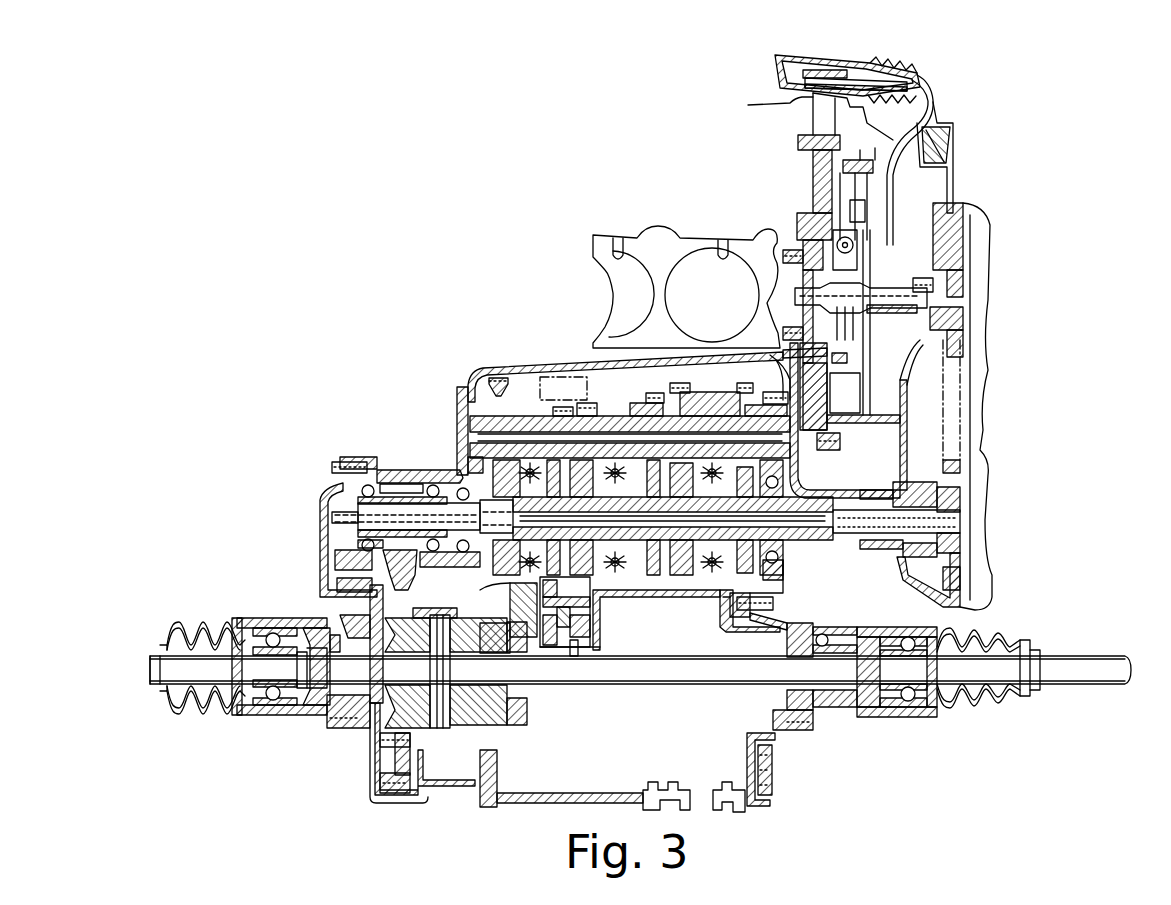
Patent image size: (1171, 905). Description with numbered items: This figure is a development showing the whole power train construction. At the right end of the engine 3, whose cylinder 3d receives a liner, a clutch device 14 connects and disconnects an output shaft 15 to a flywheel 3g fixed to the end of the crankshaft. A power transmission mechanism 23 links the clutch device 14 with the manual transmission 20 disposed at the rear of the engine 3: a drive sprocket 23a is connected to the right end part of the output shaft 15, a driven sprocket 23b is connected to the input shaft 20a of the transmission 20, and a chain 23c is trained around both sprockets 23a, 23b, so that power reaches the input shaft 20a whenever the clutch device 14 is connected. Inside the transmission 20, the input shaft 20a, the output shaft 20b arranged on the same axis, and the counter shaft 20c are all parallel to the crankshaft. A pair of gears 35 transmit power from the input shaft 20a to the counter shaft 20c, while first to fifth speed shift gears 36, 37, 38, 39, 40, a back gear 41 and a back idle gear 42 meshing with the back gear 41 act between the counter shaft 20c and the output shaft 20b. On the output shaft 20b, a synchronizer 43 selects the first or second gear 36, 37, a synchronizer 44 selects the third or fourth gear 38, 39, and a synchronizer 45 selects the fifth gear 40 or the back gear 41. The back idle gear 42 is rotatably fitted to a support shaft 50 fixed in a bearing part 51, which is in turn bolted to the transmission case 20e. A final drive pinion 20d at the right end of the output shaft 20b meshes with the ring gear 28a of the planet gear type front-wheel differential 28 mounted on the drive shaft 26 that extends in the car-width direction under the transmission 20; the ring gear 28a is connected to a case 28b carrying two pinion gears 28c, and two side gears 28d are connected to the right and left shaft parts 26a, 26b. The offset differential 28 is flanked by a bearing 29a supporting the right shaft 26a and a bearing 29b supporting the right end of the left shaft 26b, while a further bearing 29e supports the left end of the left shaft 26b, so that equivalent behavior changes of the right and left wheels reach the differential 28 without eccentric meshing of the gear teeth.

The engine 3 is at (657, 226).
The cylinder 3d is at (618, 250).
The flywheel 3g is at (818, 452).
The clutch device 14 is at (875, 152).
The output shaft 15 is at (870, 320).
The manual transmission 20 is at (545, 365).
The input shaft 20a is at (815, 533).
The output shaft 20b is at (452, 452).
The counter shaft 20c is at (630, 420).
The final drive pinion 20d is at (405, 475).
The transmission case 20e is at (463, 396).
The power transmission mechanism 23 is at (981, 378).
The drive sprocket 23a is at (966, 255).
The driven sprocket 23b is at (966, 565).
The chain 23c is at (965, 412).
The drive shaft 26 is at (613, 680).
The right shaft part 26a is at (352, 690).
The left shaft part 26b is at (757, 683).
The front-wheel differential 28 is at (428, 765).
The ring gear 28a is at (382, 775).
The case 28b is at (422, 712).
The pinion gears 28c is at (446, 615).
The side gears 28d is at (517, 724).
The bearing 29a is at (355, 612).
The bearing 29b is at (513, 610).
The bearing 29e is at (800, 630).
The pair of gears 35 is at (750, 381).
The first speed shift gear 36 is at (587, 402).
The second speed shift gear 37 is at (656, 392).
The third speed shift gear 38 is at (689, 397).
The fourth speed shift gear 39 is at (748, 574).
The fifth speed shift gear 40 is at (497, 377).
The back gear 41 is at (550, 412).
The back idle gear 42 is at (602, 583).
The synchronizer 43 is at (643, 582).
The synchronizer 44 is at (710, 580).
The synchronizer 45 is at (538, 575).
The support shaft 50 is at (588, 626).
The bearing part 51 is at (575, 660).